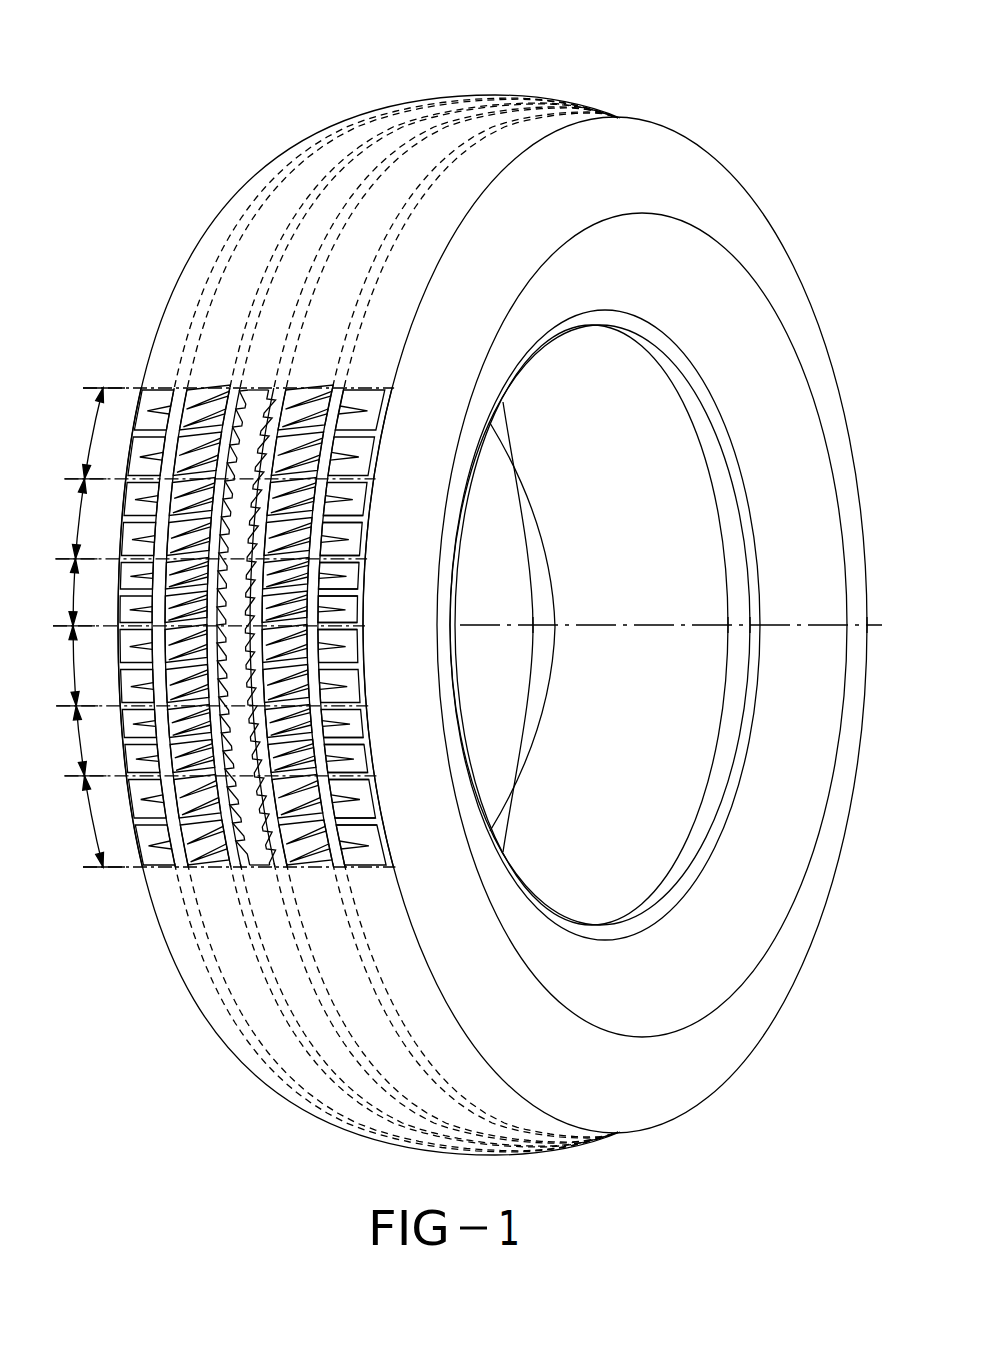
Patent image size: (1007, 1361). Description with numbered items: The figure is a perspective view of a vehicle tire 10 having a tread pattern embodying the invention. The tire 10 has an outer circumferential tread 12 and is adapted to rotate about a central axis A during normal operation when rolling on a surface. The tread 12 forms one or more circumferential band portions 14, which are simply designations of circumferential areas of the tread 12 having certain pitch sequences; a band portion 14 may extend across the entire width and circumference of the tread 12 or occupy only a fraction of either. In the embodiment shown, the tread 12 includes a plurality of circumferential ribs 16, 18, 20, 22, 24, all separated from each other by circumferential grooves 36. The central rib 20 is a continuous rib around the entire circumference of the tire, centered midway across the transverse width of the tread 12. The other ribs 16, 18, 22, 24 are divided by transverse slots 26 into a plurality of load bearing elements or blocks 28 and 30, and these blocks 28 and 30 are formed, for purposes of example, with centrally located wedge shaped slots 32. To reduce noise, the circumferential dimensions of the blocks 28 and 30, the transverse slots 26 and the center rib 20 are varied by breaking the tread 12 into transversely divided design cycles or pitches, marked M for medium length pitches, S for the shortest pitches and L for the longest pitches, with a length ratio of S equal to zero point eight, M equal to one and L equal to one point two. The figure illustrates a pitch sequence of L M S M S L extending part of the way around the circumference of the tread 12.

The vehicle tire 10 is at (727, 119).
The outer circumferential tread 12 is at (162, 397).
The circumferential band portion 14 is at (360, 397).
The circumferential rib 16 is at (163, 868).
The circumferential rib 18 is at (207, 873).
The central rib 20 is at (258, 865).
The circumferential rib 22 is at (318, 868).
The circumferential rib 24 is at (368, 865).
The transverse slots 26 is at (340, 633).
The blocks 28 is at (312, 422).
The blocks 30 is at (354, 468).
The wedge shaped slots 32 is at (341, 847).
The circumferential grooves 36 is at (335, 395).
The central axis A is at (630, 625).
The longest length pitch L is at (91, 437).
The medium length pitch M is at (85, 516).
The shortest length pitch S is at (75, 589).